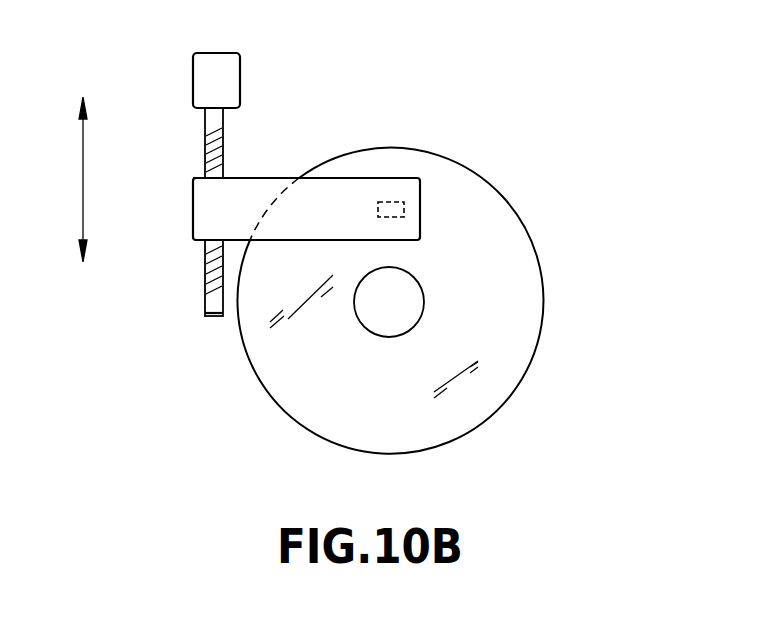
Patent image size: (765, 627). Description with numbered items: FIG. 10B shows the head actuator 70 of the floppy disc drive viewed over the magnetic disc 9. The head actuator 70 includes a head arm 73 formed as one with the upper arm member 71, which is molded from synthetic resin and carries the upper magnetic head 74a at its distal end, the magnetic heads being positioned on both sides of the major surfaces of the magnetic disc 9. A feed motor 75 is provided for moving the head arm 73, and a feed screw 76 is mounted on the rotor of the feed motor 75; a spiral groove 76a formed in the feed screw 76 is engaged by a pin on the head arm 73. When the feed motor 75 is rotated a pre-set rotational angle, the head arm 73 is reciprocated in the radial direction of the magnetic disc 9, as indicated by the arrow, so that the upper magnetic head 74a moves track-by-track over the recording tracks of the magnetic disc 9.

The magnetic disc 9 is at (513, 258).
The head actuator 70 is at (126, 302).
The upper arm member 71 is at (322, 193).
The head arm 73 is at (250, 178).
The upper magnetic head 74a is at (400, 203).
The feed motor 75 is at (200, 77).
The feed screw 76 is at (205, 306).
The spiral groove 76a is at (207, 246).